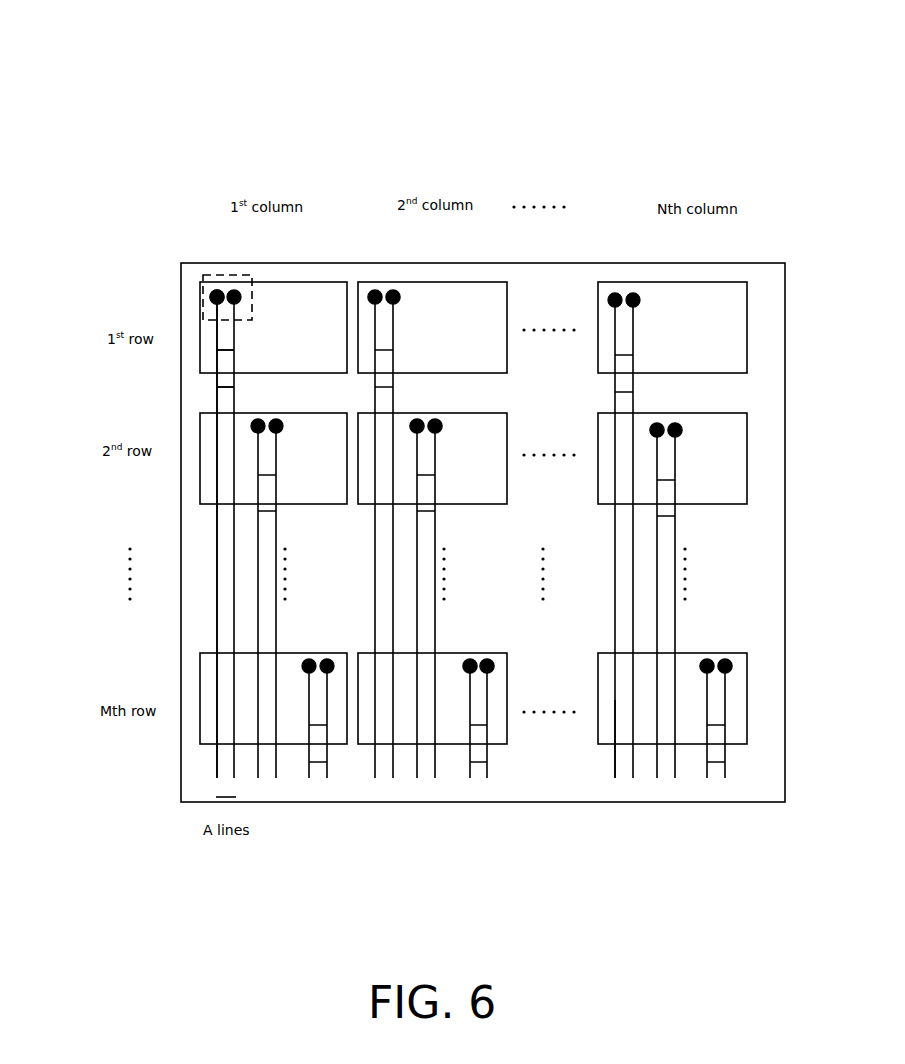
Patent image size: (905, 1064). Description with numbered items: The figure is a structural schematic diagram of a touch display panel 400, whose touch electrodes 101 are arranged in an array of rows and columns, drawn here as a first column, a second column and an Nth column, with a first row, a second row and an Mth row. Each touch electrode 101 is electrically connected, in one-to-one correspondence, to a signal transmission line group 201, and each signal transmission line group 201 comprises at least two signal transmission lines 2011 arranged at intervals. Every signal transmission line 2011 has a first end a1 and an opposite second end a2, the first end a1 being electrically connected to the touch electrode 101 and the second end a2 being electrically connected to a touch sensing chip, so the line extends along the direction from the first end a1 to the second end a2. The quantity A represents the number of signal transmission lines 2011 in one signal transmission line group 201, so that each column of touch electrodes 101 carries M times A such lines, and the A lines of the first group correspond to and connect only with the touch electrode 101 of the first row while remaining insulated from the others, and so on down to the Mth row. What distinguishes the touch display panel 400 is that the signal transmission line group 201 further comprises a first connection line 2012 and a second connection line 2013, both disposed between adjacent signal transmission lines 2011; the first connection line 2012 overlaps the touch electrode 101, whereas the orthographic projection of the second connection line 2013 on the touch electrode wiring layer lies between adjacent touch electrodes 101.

The touch display panel 400 is at (178, 108).
The touch electrode 101 is at (748, 333).
The signal transmission line group 201 is at (223, 488).
The signal transmission line 2011 is at (216, 335).
The first connection line 2012 is at (228, 350).
The second connection line 2013 is at (230, 388).
The number of signal transmission lines in a signal transmission line group A is at (226, 278).
The first end a1 is at (613, 300).
The second end a2 is at (614, 780).